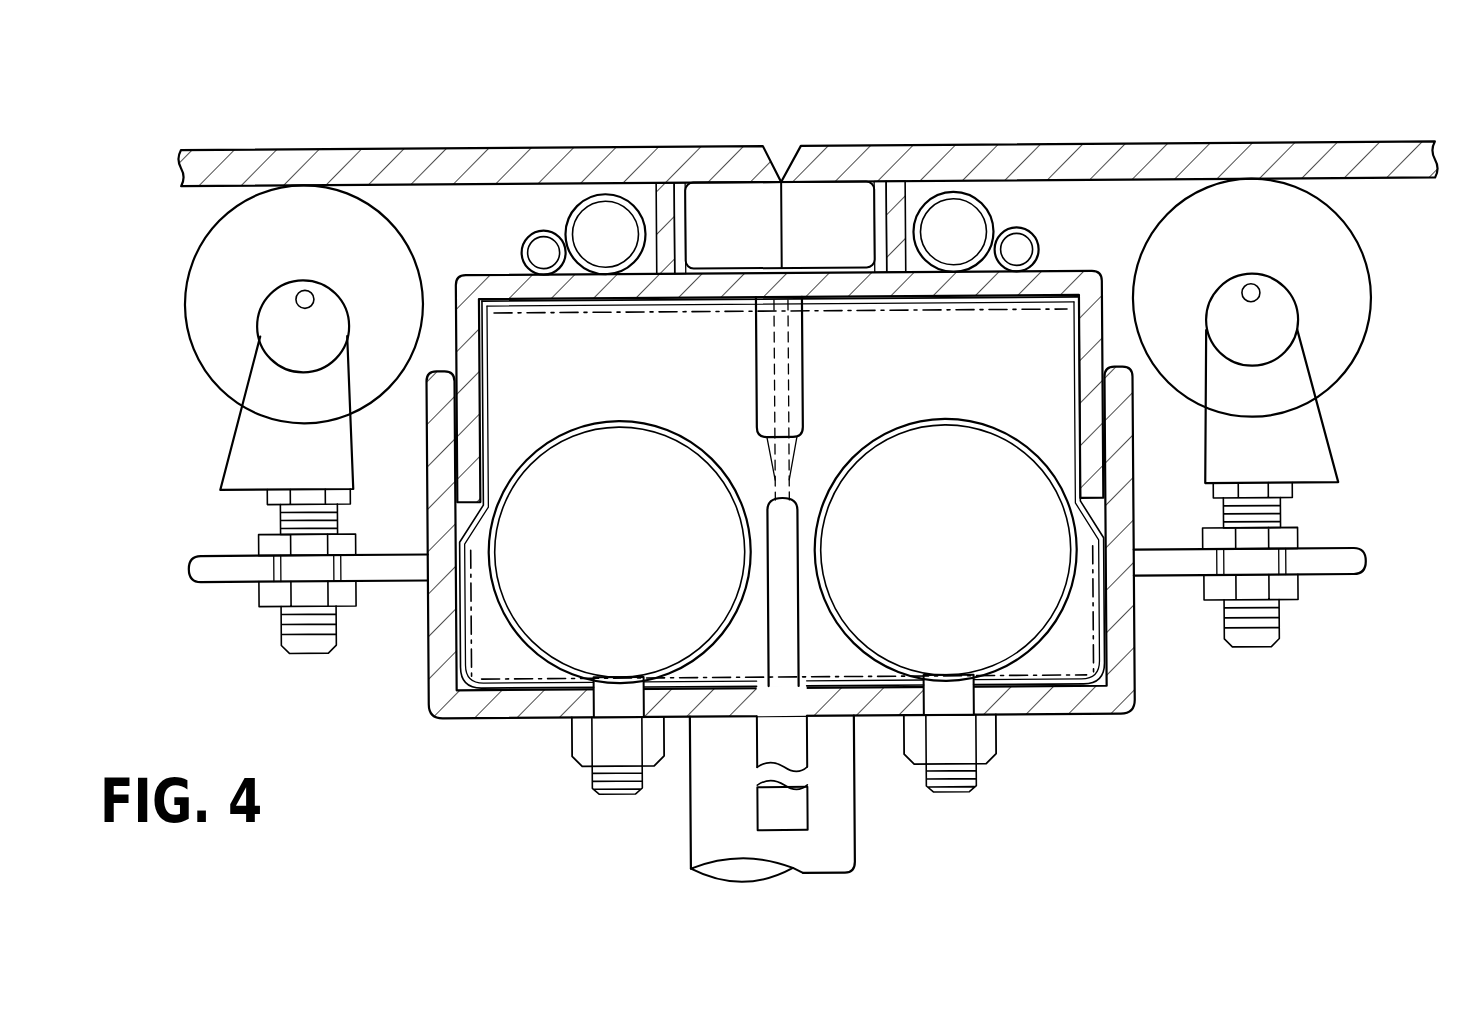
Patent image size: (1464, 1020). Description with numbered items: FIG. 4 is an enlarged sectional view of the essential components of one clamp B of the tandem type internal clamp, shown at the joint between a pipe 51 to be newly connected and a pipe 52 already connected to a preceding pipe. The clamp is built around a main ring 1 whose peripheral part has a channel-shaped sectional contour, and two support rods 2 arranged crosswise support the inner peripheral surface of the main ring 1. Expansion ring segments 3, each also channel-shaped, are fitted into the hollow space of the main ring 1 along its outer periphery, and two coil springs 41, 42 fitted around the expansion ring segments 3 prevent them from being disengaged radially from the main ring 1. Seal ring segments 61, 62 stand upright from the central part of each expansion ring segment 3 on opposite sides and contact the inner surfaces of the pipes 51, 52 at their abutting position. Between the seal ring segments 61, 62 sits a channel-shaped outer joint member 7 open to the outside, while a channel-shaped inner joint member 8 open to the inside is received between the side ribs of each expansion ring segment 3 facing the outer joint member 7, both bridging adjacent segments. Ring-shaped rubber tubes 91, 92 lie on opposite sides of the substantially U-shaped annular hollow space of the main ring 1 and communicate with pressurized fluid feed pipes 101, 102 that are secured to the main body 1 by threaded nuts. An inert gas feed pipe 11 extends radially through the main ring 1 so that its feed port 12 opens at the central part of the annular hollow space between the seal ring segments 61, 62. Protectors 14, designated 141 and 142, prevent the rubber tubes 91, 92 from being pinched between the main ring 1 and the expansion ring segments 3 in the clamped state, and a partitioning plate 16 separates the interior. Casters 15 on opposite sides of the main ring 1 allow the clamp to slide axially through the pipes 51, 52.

The main ring 1 is at (1118, 703).
The support rod 2 is at (833, 812).
The expansion ring segment 3 is at (1080, 275).
The outer joint member 7 is at (822, 258).
The inner joint member 8 is at (897, 300).
The inert gas feed pipe 11 is at (798, 398).
The feed port 12 is at (783, 262).
The protector 14 is at (781, 492).
The protector 141 is at (1000, 314).
The protector 142 is at (598, 307).
The caster 15 is at (190, 287).
The partitioning plate 16 is at (780, 622).
The coil spring 41 is at (965, 194).
The coil spring 42 is at (580, 210).
The pipe to be newly connected 51 is at (1195, 145).
The pipe already connected 52 is at (240, 160).
The seal ring segment 61 is at (897, 212).
The seal ring segment 62 is at (657, 212).
The rubber tube 91 is at (983, 455).
The rubber tube 92 is at (548, 478).
The pressurized fluid feed pipe 101 is at (965, 770).
The pressurized fluid feed pipe 102 is at (600, 770).
The clamp B is at (1415, 288).